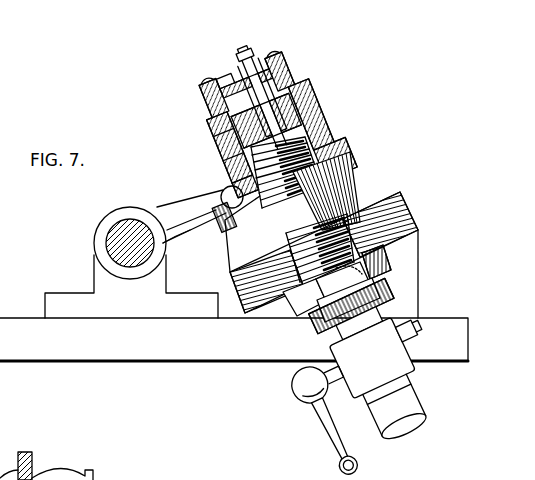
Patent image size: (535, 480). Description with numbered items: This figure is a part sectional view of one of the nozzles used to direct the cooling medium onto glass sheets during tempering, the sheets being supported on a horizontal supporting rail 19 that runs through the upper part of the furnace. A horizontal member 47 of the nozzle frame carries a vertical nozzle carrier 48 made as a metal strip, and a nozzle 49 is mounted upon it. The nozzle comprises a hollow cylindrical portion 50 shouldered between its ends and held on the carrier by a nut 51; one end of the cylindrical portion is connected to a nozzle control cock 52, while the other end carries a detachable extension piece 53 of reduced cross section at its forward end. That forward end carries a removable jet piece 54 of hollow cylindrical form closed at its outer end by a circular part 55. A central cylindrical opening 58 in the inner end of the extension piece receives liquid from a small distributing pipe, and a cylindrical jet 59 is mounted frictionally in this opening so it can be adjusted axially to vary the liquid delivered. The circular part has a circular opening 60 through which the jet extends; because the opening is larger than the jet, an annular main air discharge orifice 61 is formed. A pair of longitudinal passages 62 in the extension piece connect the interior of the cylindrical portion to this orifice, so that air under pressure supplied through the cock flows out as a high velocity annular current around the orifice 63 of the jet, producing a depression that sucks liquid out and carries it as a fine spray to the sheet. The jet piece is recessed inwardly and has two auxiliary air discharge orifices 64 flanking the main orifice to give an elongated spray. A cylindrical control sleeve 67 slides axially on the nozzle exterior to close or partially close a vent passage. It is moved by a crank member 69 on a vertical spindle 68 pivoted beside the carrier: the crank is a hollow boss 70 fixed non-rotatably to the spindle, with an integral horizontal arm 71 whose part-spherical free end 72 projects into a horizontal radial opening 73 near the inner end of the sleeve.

The horizontal supporting rail 19 is at (36, 468).
The horizontal member 47 is at (252, 336).
The nozzle carrier 48 is at (380, 214).
The nozzle 49 is at (340, 126).
The hollow cylindrical portion 50 is at (325, 208).
The nut 51 is at (386, 272).
The nozzle control cock 52 is at (393, 362).
The extension piece 53 is at (326, 114).
The jet piece 54 is at (284, 60).
The circular part 55 is at (214, 78).
The central cylindrical opening 58 is at (226, 163).
The cylindrical jet 59 is at (294, 100).
The circular opening 60 is at (226, 82).
The main air discharge orifice 61 is at (258, 84).
The longitudinal passage 62 is at (230, 120).
The orifice of the jet 63 is at (248, 88).
The auxiliary air discharge orifice 64 is at (268, 52).
The cylindrical control sleeve 67 is at (212, 130).
The spindle 68 is at (127, 245).
The crank member 69 is at (162, 208).
The hollow boss 70 is at (118, 223).
The horizontal arm 71 is at (182, 233).
The free end 72 is at (220, 219).
The horizontal radial opening 73 is at (220, 197).